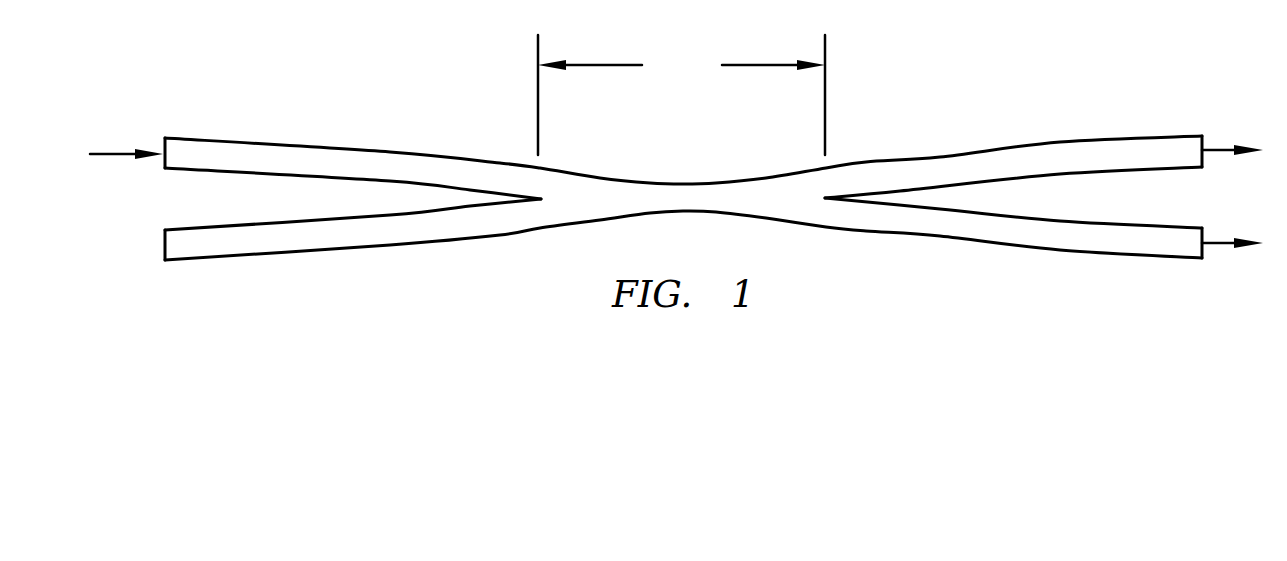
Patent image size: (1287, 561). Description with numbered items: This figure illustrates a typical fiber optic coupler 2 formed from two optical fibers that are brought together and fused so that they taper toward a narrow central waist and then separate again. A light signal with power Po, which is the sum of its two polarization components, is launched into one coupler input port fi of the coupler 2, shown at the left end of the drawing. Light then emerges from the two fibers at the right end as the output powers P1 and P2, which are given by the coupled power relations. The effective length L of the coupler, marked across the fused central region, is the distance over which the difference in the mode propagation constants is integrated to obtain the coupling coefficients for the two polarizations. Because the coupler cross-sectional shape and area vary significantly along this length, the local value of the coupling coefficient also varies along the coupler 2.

The coupler 2 is at (318, 148).
The coupler input port fi is at (137, 113).
The launched signal power Po is at (126, 171).
The output power P1 is at (1232, 264).
The output power P2 is at (1232, 169).
The effective length L is at (681, 95).